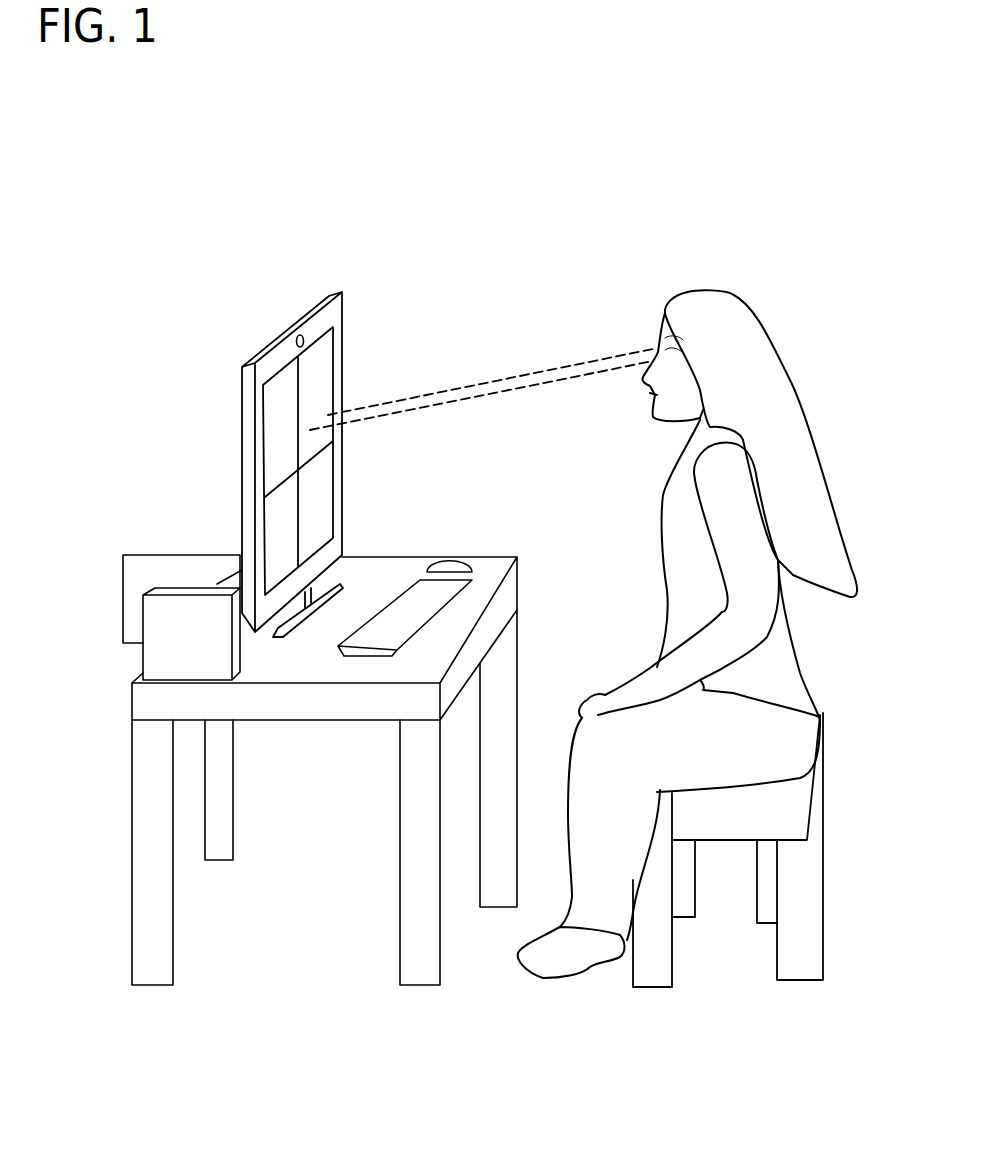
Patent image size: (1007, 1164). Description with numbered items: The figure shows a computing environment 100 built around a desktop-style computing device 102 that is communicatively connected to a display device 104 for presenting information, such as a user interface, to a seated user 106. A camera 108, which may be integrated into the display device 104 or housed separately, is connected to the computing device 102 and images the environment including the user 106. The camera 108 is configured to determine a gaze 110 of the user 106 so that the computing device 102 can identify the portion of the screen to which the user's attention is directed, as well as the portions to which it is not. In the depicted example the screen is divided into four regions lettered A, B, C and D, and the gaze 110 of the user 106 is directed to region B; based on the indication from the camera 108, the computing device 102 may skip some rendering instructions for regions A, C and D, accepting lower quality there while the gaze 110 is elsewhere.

The computing environment 100 is at (687, 118).
The computing device 102 is at (210, 651).
The display device 104 is at (243, 445).
The user 106 is at (753, 525).
The camera 108 is at (300, 330).
The gaze 110 is at (497, 370).